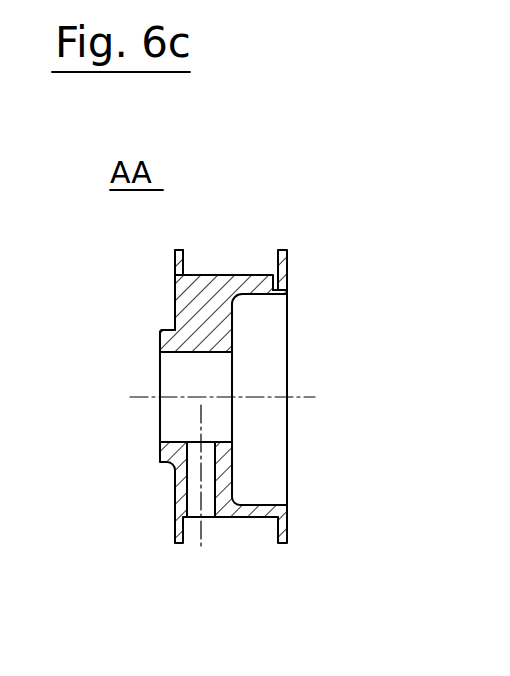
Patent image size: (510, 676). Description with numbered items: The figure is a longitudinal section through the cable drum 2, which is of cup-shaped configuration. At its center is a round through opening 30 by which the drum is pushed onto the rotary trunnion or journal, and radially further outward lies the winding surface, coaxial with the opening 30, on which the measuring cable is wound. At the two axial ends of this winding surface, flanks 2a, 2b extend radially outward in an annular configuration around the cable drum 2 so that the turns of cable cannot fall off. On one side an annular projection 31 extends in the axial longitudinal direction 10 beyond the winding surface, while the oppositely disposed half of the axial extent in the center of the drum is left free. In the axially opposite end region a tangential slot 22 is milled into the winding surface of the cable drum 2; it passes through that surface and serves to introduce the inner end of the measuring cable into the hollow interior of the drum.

The cable drum 2 is at (223, 396).
The flank 2a is at (180, 250).
The flank 2b is at (283, 250).
The axial longitudinal direction 10 is at (275, 400).
The tangential slot 22 is at (283, 293).
The central round through opening 30 is at (196, 397).
The annular projection 31 is at (160, 342).